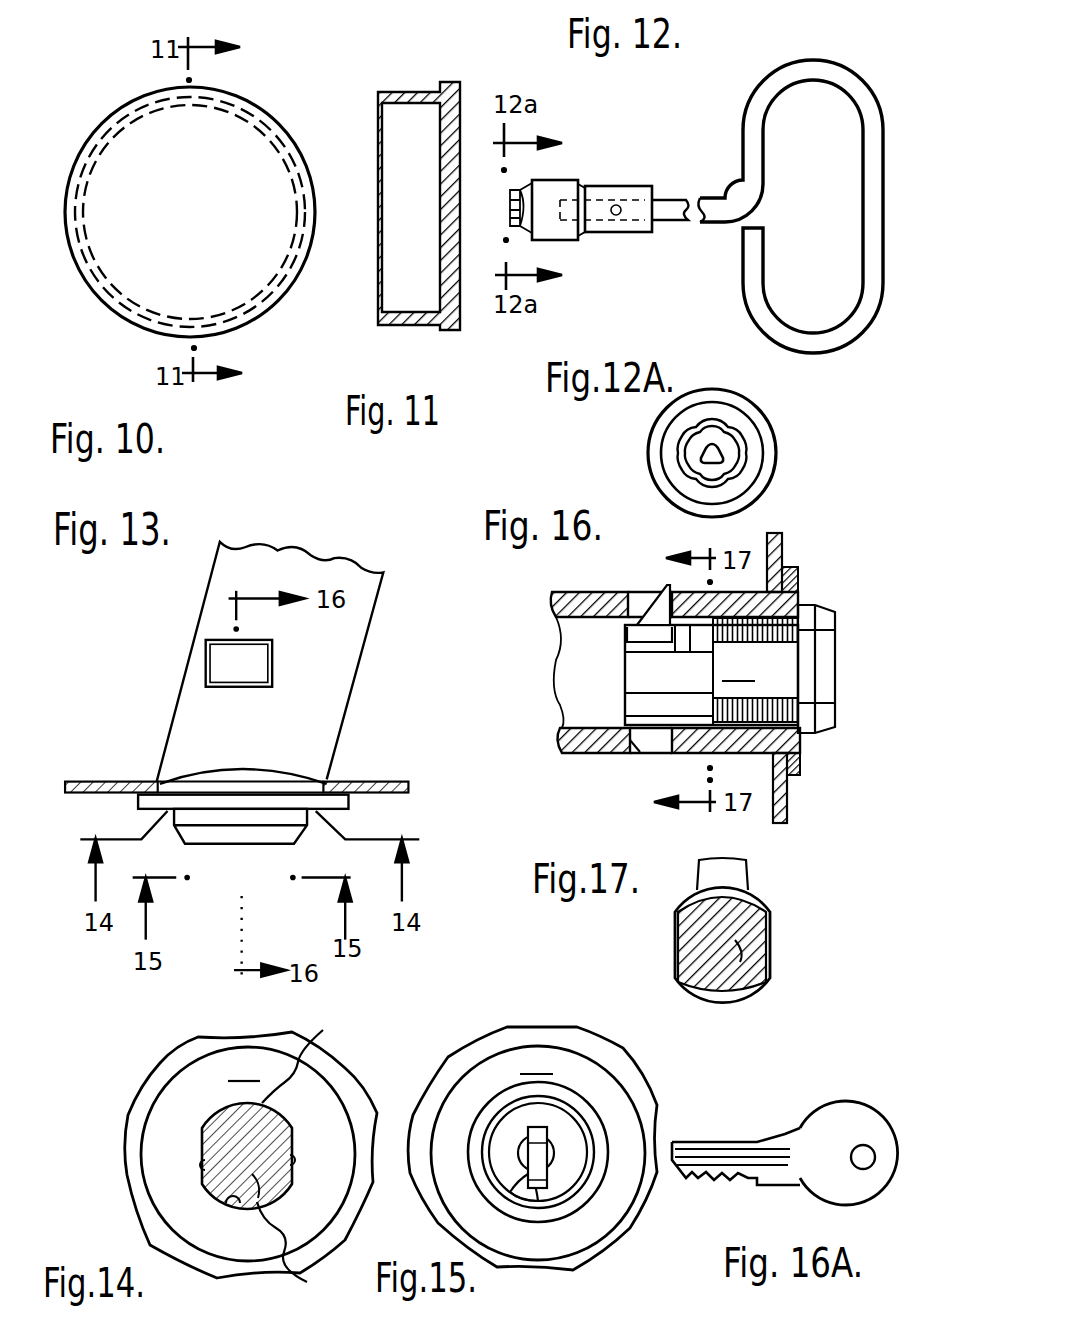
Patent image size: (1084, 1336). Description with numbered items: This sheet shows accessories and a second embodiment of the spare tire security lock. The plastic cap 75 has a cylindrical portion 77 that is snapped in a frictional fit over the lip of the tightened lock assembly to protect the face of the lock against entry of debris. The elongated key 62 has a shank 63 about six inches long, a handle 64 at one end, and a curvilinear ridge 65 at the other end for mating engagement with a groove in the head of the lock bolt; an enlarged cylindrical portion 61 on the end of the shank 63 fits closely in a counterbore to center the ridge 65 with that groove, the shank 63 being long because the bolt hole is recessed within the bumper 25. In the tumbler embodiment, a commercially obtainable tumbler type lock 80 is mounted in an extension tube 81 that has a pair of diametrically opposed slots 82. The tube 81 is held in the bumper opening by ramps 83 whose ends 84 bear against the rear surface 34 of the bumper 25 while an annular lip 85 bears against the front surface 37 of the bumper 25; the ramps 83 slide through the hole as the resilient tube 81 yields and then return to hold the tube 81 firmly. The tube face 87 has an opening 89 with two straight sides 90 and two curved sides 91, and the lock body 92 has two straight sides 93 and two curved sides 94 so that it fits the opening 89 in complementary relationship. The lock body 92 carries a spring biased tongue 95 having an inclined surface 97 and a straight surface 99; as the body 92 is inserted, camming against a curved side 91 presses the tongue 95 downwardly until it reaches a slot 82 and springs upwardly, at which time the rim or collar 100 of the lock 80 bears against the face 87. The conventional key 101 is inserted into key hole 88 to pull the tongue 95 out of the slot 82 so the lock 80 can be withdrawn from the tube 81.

In FIG. 13, the bumper 25 is at (62, 760).
In FIG. 16, the bumper 25 is at (790, 823).
In FIG. 14, the bumper 25 is at (140, 1097).
In FIG. 15, the bumper 25 is at (468, 1045).
In FIG. 13, the rear surface of bumper 34 is at (98, 760).
In FIG. 16, the rear surface of bumper 34 is at (772, 552).
In FIG. 13, the front surface of bumper 37 is at (74, 815).
In FIG. 16, the front surface of bumper 37 is at (788, 795).
In FIG. 14, the front surface of bumper 37 is at (177, 1063).
In FIG. 15, the front surface of bumper 37 is at (509, 1035).
In FIG. 12, the enlarged cylindrical portion 61 is at (565, 240).
In FIG. 12A, the enlarged cylindrical portion 61 is at (775, 447).
In FIG. 12, the key 62 is at (690, 168).
In FIG. 12, the shank 63 is at (713, 226).
In FIG. 12, the handle 64 is at (838, 62).
In FIG. 12, the curvilinear ridge 65 is at (515, 186).
In FIG. 12A, the curvilinear ridge 65 is at (735, 420).
In FIG. 10, the plastic cap 75 is at (137, 128).
In FIG. 11, the plastic cap 75 is at (462, 104).
In FIG. 10, the cylindrical portion 77 is at (232, 108).
In FIG. 11, the cylindrical portion 77 is at (396, 322).
In FIG. 13, the tumbler type lock 80 is at (232, 867).
In FIG. 16, the tumbler type lock 80 is at (834, 606).
In FIG. 15, the tumbler type lock 80 is at (583, 1040).
In FIG. 13, the extension tube 81 is at (333, 652).
In FIG. 16, the extension tube 81 is at (578, 755).
In FIG. 13, the slots 82 is at (192, 645).
In FIG. 16, the slots 82 is at (632, 620).
In FIG. 13, the ramps 83 is at (245, 757).
In FIG. 16, the ramps 83 is at (768, 590).
In FIG. 13, the ends of ramps 84 is at (208, 762).
In FIG. 16, the ends of ramps 84 is at (797, 578).
In FIG. 13, the annular lip 85 is at (318, 774).
In FIG. 16, the annular lip 85 is at (792, 570).
In FIG. 14, the annular lip 85 is at (155, 1145).
In FIG. 15, the annular lip 85 is at (607, 1091).
In FIG. 13, the tube face 87 is at (300, 789).
In FIG. 16, the tube face 87 is at (800, 736).
In FIG. 14, the tube face 87 is at (248, 1154).
In FIG. 15, the tube face 87 is at (538, 1153).
In FIG. 15, the key hole 88 is at (560, 1186).
In FIG. 16, the opening 89 is at (805, 640).
In FIG. 14, the opening 89 is at (233, 1201).
In FIG. 14, the straight sides 90 is at (206, 1165).
In FIG. 14, the curved sides 91 is at (299, 1151).
In FIG. 16, the lock body 92 is at (800, 703).
In FIG. 17, the lock body 92 is at (770, 941).
In FIG. 14, the lock body 92 is at (258, 1178).
In FIG. 16, the straight sides of lock body 93 is at (711, 671).
In FIG. 17, the straight sides of lock body 93 is at (770, 926).
In FIG. 14, the straight sides of lock body 93 is at (201, 1147).
In FIG. 17, the curved sides of lock body 94 is at (752, 898).
In FIG. 13, the spring biased tongue 95 is at (240, 650).
In FIG. 16, the spring biased tongue 95 is at (560, 640).
In FIG. 17, the spring biased tongue 95 is at (713, 860).
In FIG. 13, the inclined surface 97 is at (207, 640).
In FIG. 16, the inclined surface 97 is at (648, 592).
In FIG. 13, the straight surface 99 is at (231, 673).
In FIG. 16, the straight surface 99 is at (682, 645).
In FIG. 17, the straight surface 99 is at (738, 871).
In FIG. 16, the rim or collar 100 is at (800, 628).
In FIG. 16A, the key 101 is at (780, 1130).